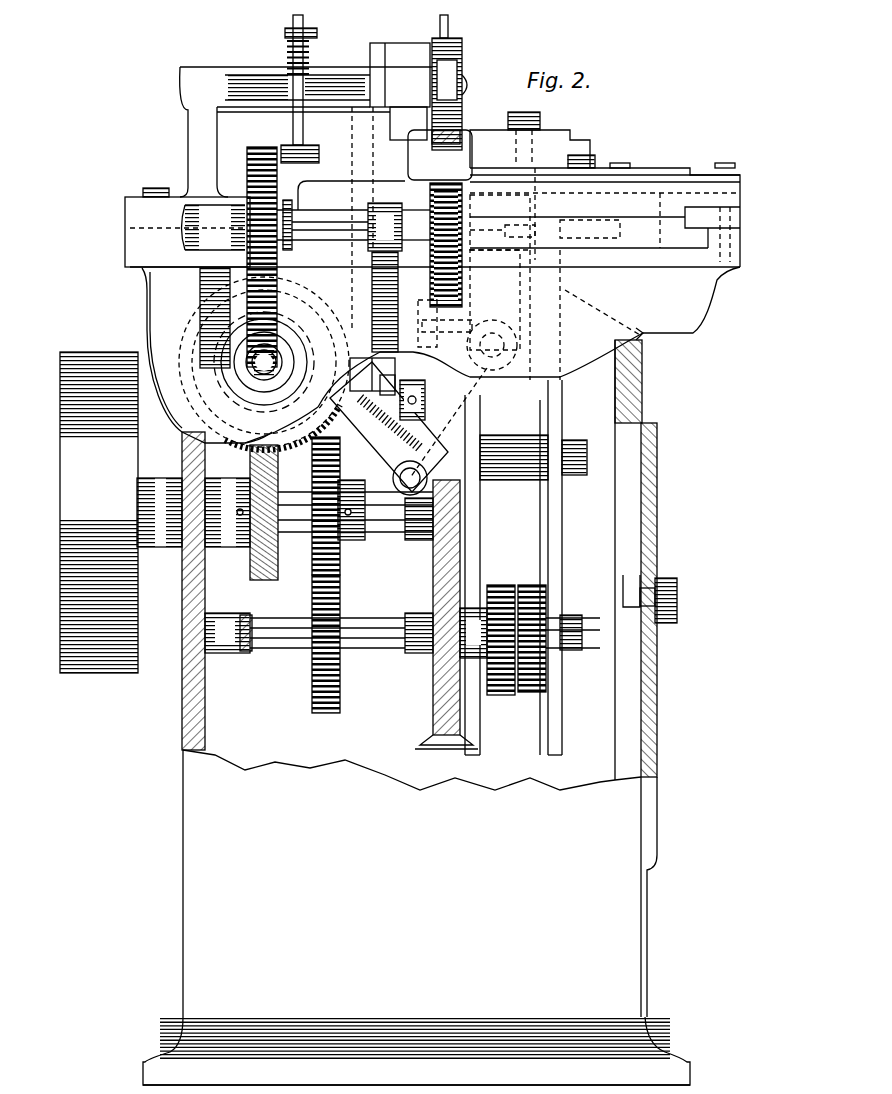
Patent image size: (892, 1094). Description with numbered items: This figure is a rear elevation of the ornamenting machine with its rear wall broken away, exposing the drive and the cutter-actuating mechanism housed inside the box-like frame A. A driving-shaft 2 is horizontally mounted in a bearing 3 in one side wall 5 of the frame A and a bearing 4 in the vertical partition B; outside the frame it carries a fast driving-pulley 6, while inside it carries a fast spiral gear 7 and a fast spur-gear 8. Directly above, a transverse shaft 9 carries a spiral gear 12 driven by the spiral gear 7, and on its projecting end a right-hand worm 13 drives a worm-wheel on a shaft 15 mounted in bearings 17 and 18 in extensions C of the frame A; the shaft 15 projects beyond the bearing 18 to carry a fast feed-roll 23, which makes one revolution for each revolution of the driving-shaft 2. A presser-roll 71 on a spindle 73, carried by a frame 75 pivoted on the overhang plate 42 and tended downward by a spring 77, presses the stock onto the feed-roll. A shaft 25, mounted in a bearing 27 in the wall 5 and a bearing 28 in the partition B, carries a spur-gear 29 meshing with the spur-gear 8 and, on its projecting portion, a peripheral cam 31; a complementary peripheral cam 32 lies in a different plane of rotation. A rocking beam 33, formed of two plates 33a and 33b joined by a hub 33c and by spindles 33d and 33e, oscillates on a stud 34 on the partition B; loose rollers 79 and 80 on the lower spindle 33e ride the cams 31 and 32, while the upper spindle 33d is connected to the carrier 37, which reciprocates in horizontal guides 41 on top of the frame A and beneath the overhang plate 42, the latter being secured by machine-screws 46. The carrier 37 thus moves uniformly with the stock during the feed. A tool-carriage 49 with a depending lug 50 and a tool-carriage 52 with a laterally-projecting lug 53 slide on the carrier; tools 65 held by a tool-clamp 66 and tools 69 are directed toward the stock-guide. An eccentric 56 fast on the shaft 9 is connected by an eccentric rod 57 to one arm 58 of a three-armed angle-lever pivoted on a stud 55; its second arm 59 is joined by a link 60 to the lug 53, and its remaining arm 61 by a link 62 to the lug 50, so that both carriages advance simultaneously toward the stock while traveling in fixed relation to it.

The frame A is at (435, 676).
The partition B is at (432, 708).
The extensions of the frame C is at (200, 283).
The driving-shaft 2 is at (390, 525).
The bearing 3 is at (228, 547).
The bearing 4 is at (420, 540).
The side wall 5 is at (192, 697).
The driving-pulley 6 is at (103, 673).
The spiral gear 7 is at (265, 580).
The spur-gear 8 is at (312, 540).
The shaft 9 is at (255, 370).
The spiral gear 12 is at (300, 440).
The worm 13 is at (240, 348).
The shaft 15 is at (330, 232).
The bearing 17 is at (205, 224).
The bearing 18 is at (382, 222).
The feed-roll 23 is at (431, 207).
The shaft 25 is at (292, 650).
The bearing 27 is at (228, 653).
The bearing 28 is at (415, 653).
The spur-gear 29 is at (325, 713).
The peripheral cam 31 is at (535, 692).
The peripheral cam 32 is at (503, 695).
The rocking beam 33 is at (562, 520).
The plate 33a is at (470, 535).
The plate 33b is at (548, 553).
The hub 33c is at (508, 445).
The spindle 33d is at (645, 338).
The spindle 33e is at (570, 652).
The stud 34 is at (575, 445).
The carrier 37 is at (672, 190).
The horizontal guides 41 is at (700, 215).
The overhang plate 42 is at (140, 202).
The machine-screws 46 is at (157, 190).
The tool-carriage 49 is at (575, 157).
The depending lug 50 is at (605, 233).
The tool-carriage 52 is at (398, 52).
The laterally-projecting lug 53 is at (412, 408).
The stud 55 is at (505, 338).
The eccentric 56 is at (300, 325).
The eccentric rod 57 is at (365, 410).
The arm 58 is at (500, 375).
The arm 59 is at (445, 323).
The link 60 is at (370, 384).
The arm 61 is at (508, 278).
The link 62 is at (522, 232).
The tools 65 is at (560, 130).
The tool-clamp 66 is at (525, 130).
The tools 69 is at (450, 24).
The presser-roll 71 is at (463, 72).
The spindle 73 is at (465, 87).
The frame 75 is at (340, 92).
The spring 77 is at (290, 55).
The loose roller 79 is at (516, 660).
The loose roller 80 is at (485, 660).